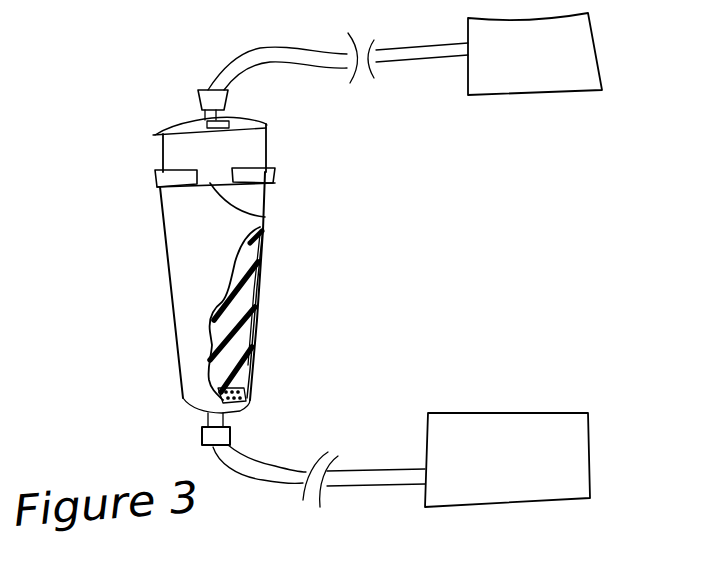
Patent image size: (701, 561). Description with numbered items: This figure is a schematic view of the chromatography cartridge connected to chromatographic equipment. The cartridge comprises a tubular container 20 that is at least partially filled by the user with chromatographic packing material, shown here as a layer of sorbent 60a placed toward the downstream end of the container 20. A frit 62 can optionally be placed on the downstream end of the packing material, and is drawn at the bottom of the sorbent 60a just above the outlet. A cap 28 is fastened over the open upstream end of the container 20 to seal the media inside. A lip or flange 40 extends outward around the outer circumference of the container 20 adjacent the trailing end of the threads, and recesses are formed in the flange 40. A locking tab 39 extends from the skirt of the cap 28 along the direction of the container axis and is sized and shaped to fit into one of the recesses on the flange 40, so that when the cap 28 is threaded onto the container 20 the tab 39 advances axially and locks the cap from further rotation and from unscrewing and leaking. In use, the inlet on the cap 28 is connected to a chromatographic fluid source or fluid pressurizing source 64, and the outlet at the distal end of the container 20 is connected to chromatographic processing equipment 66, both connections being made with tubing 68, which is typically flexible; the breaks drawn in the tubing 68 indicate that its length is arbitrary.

The tubular container 20 is at (148, 274).
The cap 28 is at (143, 163).
The flange 40 is at (278, 181).
The locking tab 39 is at (265, 217).
The sorbent 60a is at (240, 301).
The frit 62 is at (252, 400).
The fluid pressurizing source 64 is at (500, 100).
The chromatographic processing equipment 66 is at (488, 413).
The tubing 68 is at (258, 53).